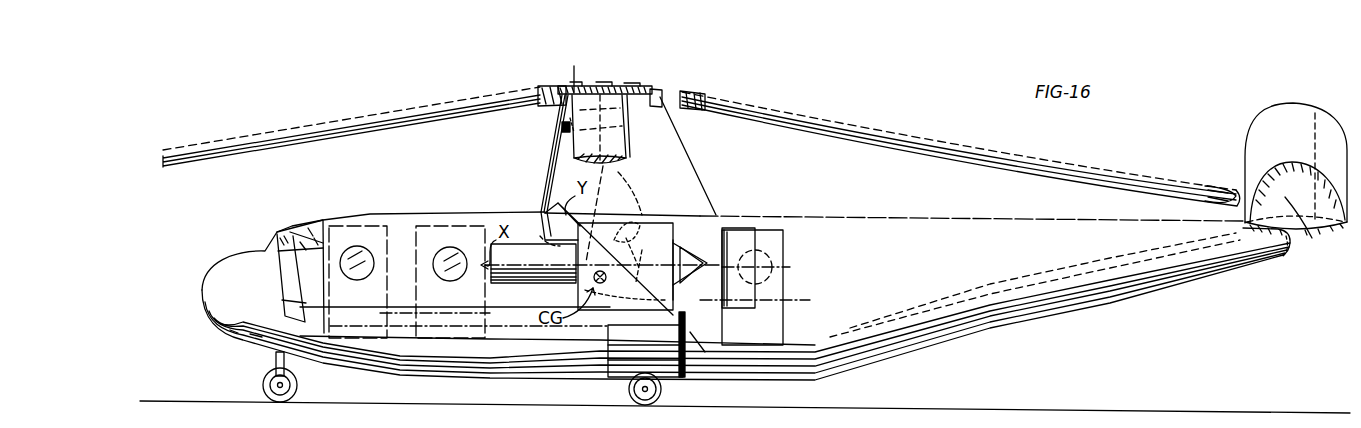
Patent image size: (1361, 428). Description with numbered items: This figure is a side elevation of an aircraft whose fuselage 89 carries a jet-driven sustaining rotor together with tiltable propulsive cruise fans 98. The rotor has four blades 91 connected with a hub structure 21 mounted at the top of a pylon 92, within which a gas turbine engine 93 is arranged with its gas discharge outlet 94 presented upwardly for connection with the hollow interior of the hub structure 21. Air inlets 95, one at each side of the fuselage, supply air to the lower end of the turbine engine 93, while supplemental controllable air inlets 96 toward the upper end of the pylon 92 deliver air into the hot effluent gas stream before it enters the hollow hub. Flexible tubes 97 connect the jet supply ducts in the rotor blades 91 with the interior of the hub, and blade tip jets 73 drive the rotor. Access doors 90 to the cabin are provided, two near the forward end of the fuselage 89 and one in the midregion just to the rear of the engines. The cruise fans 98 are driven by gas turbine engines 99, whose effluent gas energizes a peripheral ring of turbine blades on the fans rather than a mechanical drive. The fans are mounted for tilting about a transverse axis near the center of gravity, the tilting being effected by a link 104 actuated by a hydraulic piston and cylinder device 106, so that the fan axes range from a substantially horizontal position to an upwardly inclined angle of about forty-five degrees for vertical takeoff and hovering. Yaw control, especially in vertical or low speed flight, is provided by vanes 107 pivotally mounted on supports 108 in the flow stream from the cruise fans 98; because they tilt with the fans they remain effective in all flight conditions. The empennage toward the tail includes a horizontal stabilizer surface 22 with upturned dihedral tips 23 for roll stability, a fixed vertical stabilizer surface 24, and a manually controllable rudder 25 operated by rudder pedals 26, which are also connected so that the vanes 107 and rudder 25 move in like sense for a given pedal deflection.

The hub structure 21 is at (632, 86).
The horizontal stabilizer surface 22 is at (1310, 223).
The upturned dihedral tips 23 is at (1290, 236).
The fixed vertical stabilizer surface 24 is at (1262, 137).
The rudder 25 is at (1325, 128).
The rudder pedals 26 is at (228, 333).
The blade tip jets 73 is at (1232, 194).
The fuselage 89 is at (958, 322).
The access doors 90 is at (434, 336).
The rotor blades 91 is at (412, 112).
The pylon 92 is at (692, 162).
The gas turbine engine 93 is at (558, 158).
The gas discharge outlet 94 is at (566, 138).
The air inlets 95 is at (543, 238).
The supplemental air inlets 96 is at (562, 125).
The flexible tubes 97 is at (574, 66).
The cruise fans 98 is at (564, 300).
The gas turbine engines 99 is at (562, 285).
The link 104 is at (636, 240).
The hydraulic piston and cylinder device 106 is at (640, 197).
The vanes 107 is at (727, 230).
The supports 108 is at (672, 316).